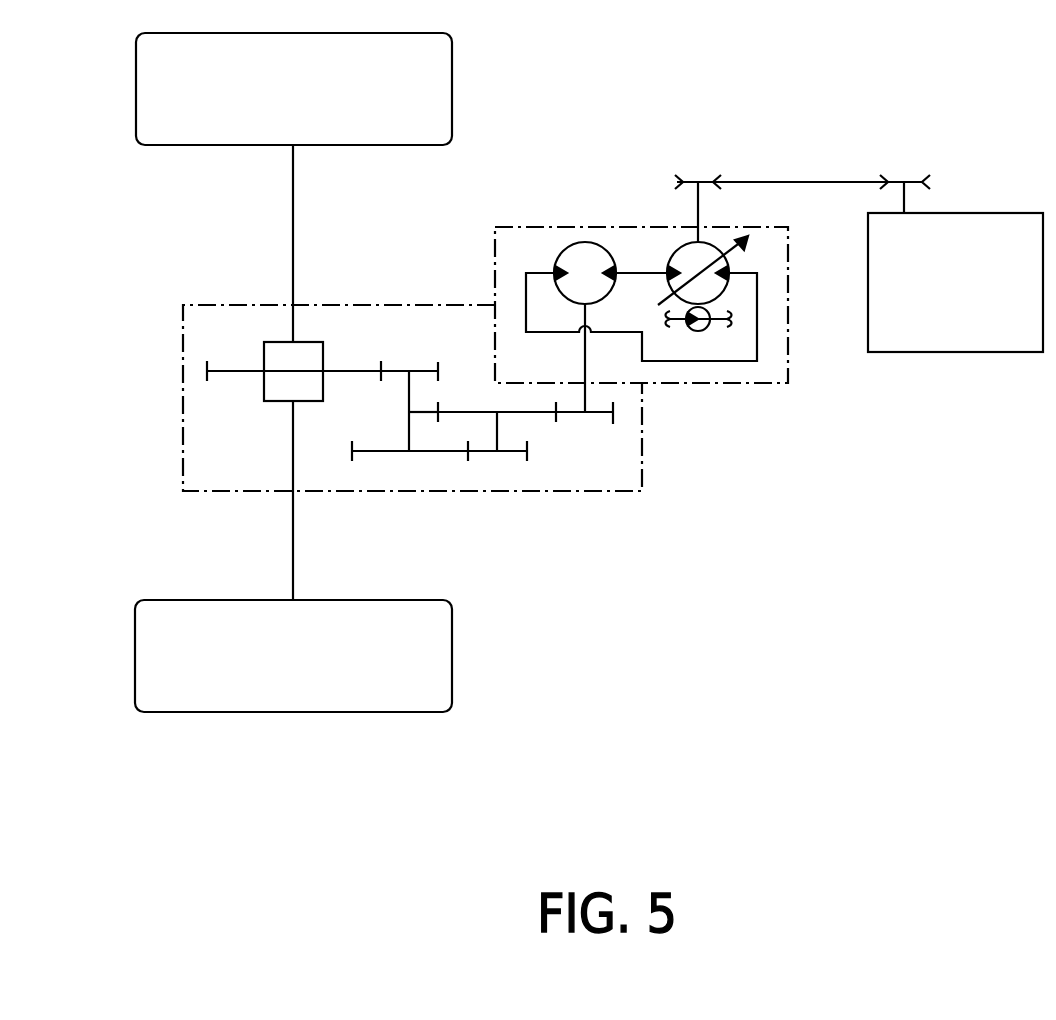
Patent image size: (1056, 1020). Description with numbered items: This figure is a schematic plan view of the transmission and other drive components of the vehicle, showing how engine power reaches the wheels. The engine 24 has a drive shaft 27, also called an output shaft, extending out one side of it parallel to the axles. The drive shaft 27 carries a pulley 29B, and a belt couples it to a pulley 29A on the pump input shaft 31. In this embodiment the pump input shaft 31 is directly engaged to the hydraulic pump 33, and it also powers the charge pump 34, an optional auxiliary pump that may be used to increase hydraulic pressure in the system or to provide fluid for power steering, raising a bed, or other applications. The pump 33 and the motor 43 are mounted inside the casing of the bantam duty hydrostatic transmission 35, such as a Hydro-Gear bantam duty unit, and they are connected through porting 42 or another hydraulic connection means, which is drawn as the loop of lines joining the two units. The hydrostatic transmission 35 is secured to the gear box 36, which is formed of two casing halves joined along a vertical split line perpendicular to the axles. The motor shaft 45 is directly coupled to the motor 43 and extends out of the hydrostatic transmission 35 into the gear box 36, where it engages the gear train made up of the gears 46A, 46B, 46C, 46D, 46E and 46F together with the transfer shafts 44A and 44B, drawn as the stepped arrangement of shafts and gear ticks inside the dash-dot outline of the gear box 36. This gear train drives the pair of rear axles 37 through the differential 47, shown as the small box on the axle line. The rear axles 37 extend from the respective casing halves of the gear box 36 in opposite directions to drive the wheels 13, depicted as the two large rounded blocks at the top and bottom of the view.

The drive wheels 13 is at (316, 104).
The engine 24 is at (980, 296).
The drive shaft 27 is at (904, 198).
The pulley 29A is at (688, 180).
The pulley 29B is at (895, 182).
The pump input shaft 31 is at (693, 192).
The hydraulic pump 33 is at (713, 245).
The charge pump 34 is at (710, 330).
The hydrostatic transmission 35 is at (737, 385).
The gear box 36 is at (610, 493).
The rear axles 37 is at (293, 187).
The porting 42 is at (525, 272).
The motor 43 is at (566, 250).
The transfer shaft 44A is at (498, 430).
The transfer shaft 44B is at (409, 412).
The motor shaft 45 is at (588, 360).
The gear 46A is at (597, 413).
The gear 46B is at (468, 412).
The gear 46C is at (483, 452).
The gear 46D is at (385, 452).
The gear 46E is at (393, 370).
The gear 46F is at (352, 372).
The differential 47 is at (264, 342).